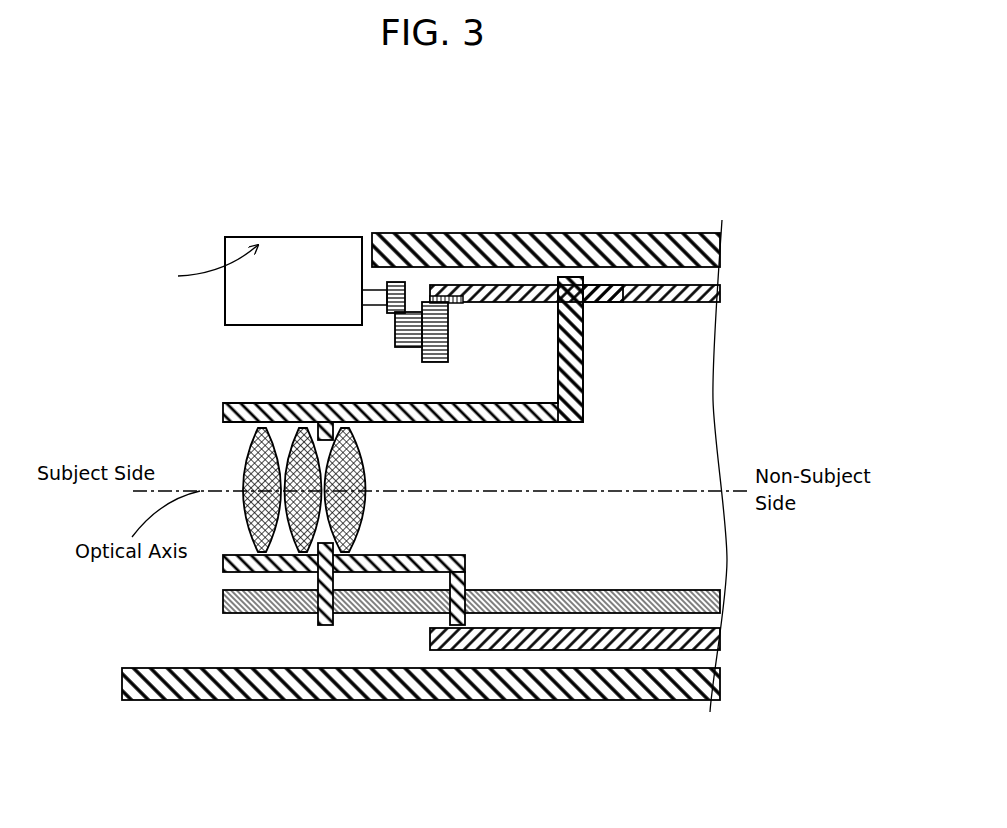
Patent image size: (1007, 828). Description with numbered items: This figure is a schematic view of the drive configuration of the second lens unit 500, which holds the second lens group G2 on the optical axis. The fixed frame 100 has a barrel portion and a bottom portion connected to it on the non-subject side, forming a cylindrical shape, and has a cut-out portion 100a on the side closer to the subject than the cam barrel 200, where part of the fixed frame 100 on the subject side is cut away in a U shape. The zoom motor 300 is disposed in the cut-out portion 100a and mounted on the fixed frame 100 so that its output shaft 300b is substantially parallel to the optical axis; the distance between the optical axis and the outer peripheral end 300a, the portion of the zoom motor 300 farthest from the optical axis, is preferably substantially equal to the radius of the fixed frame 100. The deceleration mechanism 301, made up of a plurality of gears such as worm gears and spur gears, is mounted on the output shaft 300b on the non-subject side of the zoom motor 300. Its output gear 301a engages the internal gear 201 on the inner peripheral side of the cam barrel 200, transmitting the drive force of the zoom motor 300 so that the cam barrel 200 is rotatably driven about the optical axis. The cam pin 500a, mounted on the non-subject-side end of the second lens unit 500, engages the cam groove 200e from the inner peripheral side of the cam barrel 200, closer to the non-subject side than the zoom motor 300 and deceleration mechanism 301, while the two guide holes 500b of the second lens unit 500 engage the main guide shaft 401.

The fixed frame 100 is at (425, 240).
The cut-out portion 100a is at (263, 265).
The cam barrel 200 is at (575, 466).
The cam groove 200e is at (597, 302).
The internal gear 201 is at (457, 303).
The zoom motor 300 is at (242, 255).
The outer peripheral end 300a is at (186, 266).
The output shaft 300b is at (363, 287).
The deceleration mechanism 301 is at (362, 341).
The output gear 301a is at (343, 342).
The guide shaft (main) 401 is at (222, 602).
The second lens unit 500 is at (380, 401).
The cam pin 500a is at (560, 277).
The guide holes 500b is at (457, 583).
The second lens group G2 is at (375, 478).